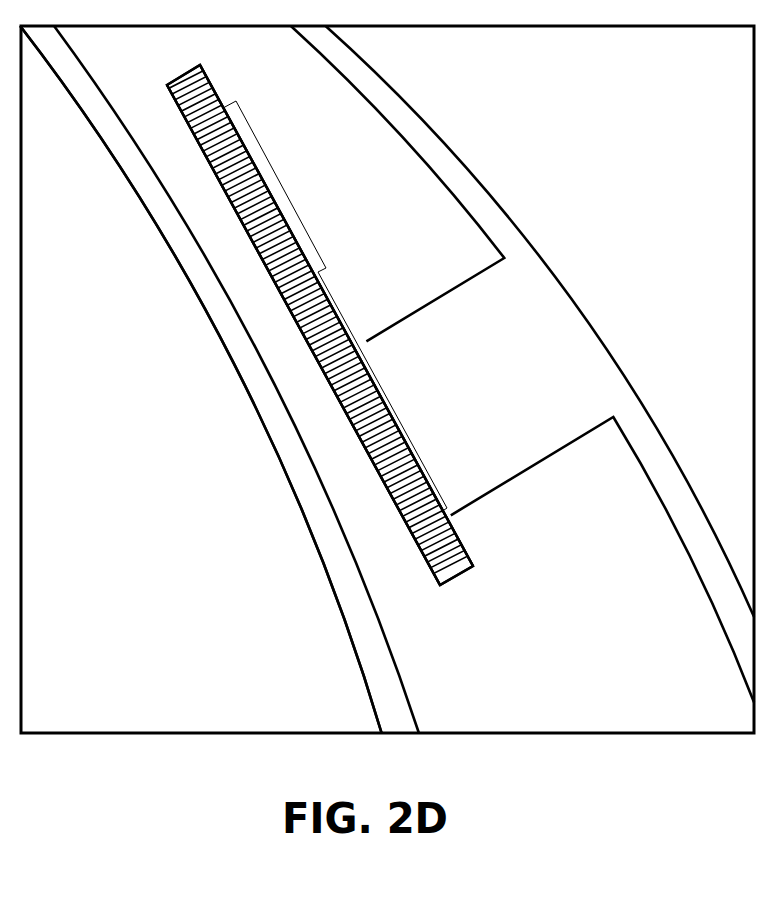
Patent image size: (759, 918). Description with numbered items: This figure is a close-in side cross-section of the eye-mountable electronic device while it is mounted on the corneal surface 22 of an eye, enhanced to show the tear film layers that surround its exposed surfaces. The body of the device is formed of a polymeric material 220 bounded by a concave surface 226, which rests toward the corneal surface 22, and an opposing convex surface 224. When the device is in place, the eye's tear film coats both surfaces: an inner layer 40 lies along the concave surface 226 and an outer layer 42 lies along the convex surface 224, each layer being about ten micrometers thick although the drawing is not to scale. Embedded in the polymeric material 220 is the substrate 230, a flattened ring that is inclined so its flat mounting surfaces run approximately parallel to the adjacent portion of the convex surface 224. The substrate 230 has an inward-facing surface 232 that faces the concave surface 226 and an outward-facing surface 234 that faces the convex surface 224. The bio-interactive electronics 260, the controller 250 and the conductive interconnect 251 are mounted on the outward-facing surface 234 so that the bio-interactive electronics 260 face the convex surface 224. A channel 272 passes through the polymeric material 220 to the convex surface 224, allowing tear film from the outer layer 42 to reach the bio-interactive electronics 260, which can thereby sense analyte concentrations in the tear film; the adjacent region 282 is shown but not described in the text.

The corneal surface 22 is at (370, 696).
The inner tear film layer 40 is at (367, 638).
The outer tear film layer 42 is at (642, 442).
The polymeric material 220 is at (645, 690).
The convex surface 224 is at (441, 177).
The concave surface 226 is at (347, 538).
The substrate 230 is at (468, 544).
The inward-facing surface 232 is at (175, 100).
The outward-facing surface 234 is at (213, 88).
The controller 250 is at (277, 192).
The conductive interconnect 251 is at (300, 327).
The bio-interactive electronics 260 is at (353, 426).
The channel 272 is at (489, 389).
The region 282 is at (103, 690).